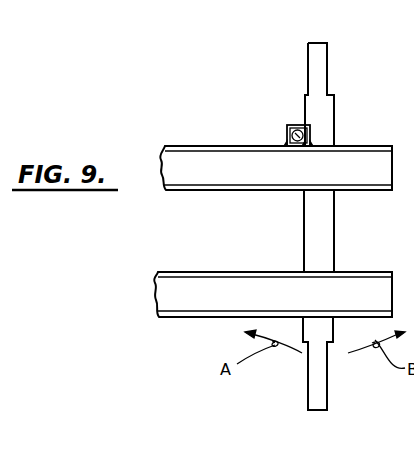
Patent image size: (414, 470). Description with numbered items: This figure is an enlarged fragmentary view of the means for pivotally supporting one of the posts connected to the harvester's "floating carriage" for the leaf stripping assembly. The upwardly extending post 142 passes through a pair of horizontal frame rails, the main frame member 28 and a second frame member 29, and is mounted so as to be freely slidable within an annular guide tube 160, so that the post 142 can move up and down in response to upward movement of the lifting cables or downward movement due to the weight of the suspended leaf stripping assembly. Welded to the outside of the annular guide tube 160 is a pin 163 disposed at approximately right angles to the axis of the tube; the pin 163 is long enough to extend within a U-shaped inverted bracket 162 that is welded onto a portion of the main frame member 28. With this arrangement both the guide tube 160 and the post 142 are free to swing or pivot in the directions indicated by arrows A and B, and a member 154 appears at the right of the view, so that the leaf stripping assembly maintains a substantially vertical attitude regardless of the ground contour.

The main frame member 28 is at (180, 146).
The lower rail 29 is at (205, 293).
The post 142 is at (314, 57).
The frame member 154 is at (413, 205).
The annular guide tube 160 is at (318, 223).
The U-shaped inverted bracket 162 is at (298, 125).
The pin 163 is at (287, 135).